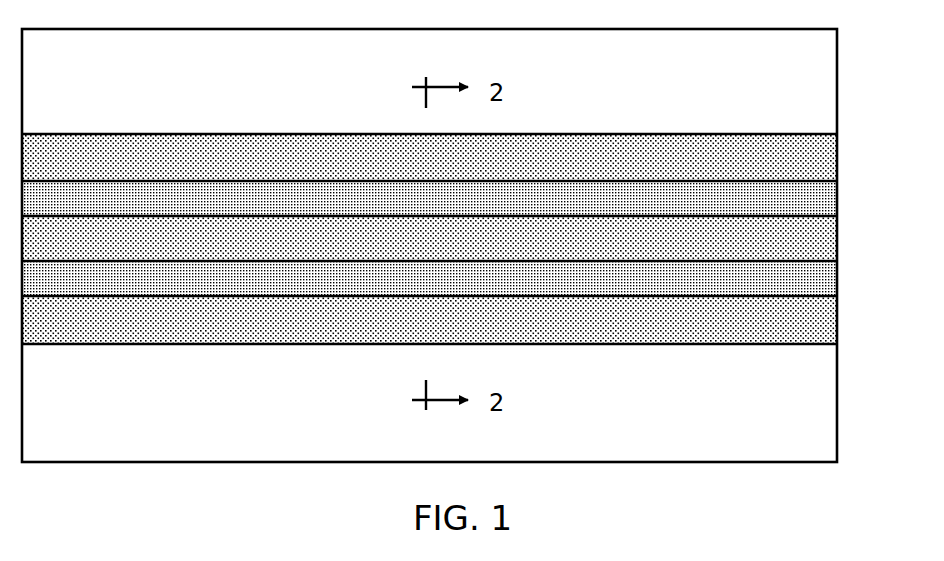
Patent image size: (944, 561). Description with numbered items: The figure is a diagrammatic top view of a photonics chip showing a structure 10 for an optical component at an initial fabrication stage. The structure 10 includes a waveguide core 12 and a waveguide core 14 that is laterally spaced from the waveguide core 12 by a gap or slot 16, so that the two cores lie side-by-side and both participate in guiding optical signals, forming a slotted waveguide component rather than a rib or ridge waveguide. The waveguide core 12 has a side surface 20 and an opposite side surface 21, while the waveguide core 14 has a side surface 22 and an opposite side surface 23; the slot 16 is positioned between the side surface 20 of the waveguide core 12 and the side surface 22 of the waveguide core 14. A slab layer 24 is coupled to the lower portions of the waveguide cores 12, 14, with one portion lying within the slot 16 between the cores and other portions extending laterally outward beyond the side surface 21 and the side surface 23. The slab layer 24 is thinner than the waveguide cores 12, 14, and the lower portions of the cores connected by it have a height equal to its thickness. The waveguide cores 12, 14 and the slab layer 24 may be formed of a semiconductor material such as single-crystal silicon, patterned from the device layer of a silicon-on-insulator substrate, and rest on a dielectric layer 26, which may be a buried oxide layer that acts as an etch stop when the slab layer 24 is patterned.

The structure 10 is at (140, 103).
The waveguide core 12 is at (235, 197).
The waveguide core 14 is at (320, 278).
The slot 16 is at (860, 216).
The side surface 20 is at (591, 216).
The side surface 21 is at (674, 181).
The side surface 22 is at (593, 262).
The side surface 23 is at (680, 297).
The slab layer 24 is at (240, 325).
The dielectric layer 26 is at (110, 415).